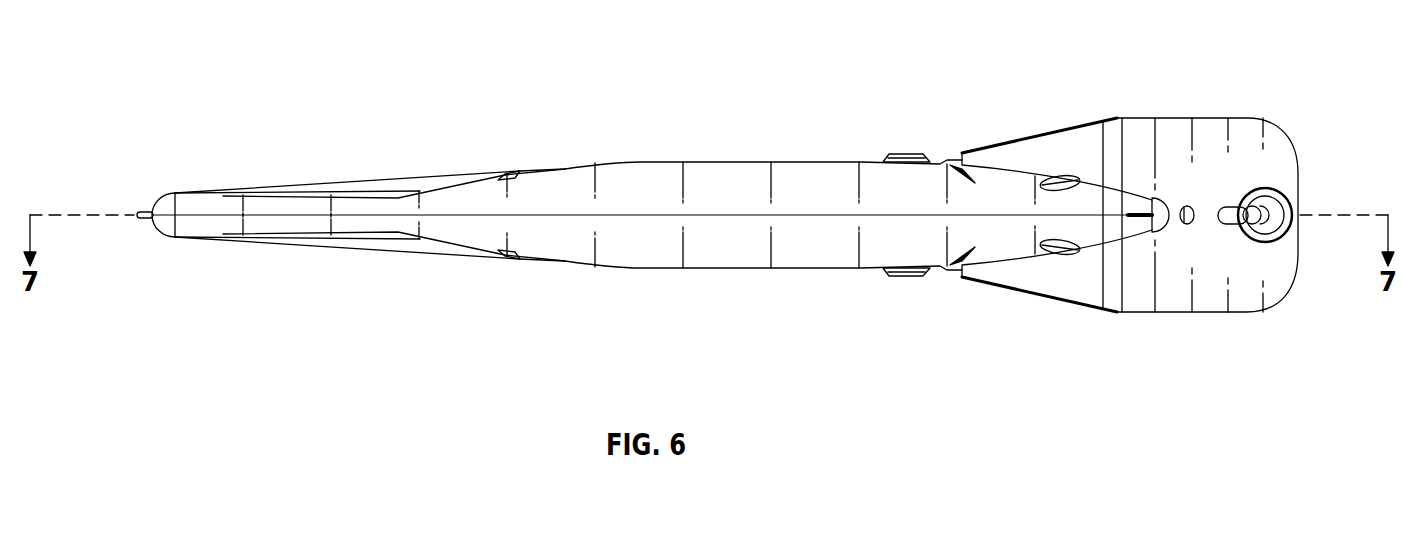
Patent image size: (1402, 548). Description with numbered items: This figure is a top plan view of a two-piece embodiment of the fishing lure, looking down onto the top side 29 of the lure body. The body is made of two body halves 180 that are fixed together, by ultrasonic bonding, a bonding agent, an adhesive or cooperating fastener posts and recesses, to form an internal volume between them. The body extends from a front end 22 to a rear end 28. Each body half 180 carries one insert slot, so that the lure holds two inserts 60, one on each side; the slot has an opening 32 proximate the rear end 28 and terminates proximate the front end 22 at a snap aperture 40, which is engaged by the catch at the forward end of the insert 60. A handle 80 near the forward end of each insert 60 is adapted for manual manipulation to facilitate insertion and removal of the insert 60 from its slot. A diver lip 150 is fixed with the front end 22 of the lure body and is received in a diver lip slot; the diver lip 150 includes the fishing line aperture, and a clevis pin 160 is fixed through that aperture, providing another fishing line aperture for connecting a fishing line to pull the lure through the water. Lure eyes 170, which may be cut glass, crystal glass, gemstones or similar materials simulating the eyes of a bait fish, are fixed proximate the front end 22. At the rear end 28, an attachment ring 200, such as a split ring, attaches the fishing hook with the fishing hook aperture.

The front end 22 is at (1158, 200).
The rear end 28 is at (157, 198).
The top side 29 is at (642, 213).
The opening 32 is at (302, 188).
The snap aperture 40 is at (943, 166).
The insert 60 is at (513, 170).
The handle 80 is at (893, 153).
The diver lip 150 is at (1277, 168).
The clevis pin 160 is at (1240, 230).
The lure eyes 170 is at (1060, 252).
The body halves 180 is at (737, 190).
The attachment ring 200 is at (140, 221).